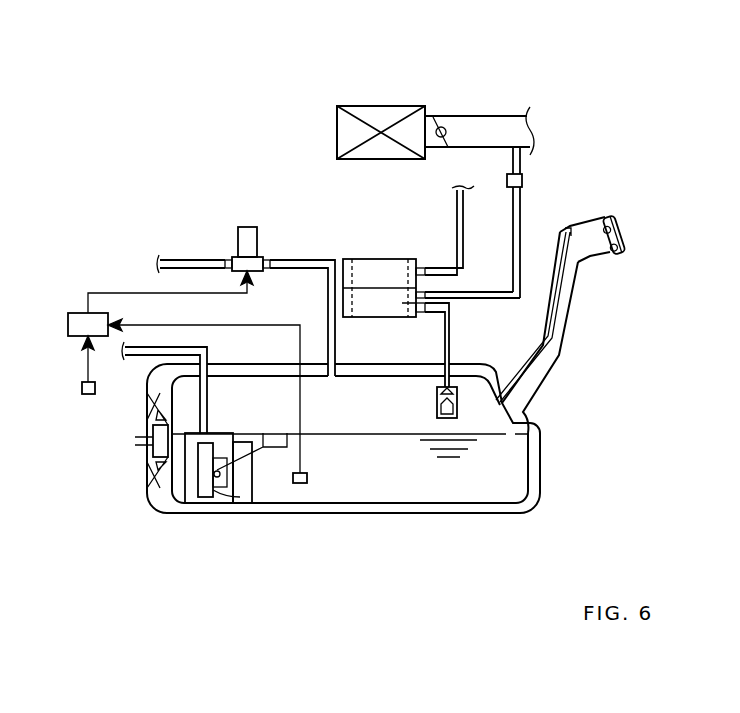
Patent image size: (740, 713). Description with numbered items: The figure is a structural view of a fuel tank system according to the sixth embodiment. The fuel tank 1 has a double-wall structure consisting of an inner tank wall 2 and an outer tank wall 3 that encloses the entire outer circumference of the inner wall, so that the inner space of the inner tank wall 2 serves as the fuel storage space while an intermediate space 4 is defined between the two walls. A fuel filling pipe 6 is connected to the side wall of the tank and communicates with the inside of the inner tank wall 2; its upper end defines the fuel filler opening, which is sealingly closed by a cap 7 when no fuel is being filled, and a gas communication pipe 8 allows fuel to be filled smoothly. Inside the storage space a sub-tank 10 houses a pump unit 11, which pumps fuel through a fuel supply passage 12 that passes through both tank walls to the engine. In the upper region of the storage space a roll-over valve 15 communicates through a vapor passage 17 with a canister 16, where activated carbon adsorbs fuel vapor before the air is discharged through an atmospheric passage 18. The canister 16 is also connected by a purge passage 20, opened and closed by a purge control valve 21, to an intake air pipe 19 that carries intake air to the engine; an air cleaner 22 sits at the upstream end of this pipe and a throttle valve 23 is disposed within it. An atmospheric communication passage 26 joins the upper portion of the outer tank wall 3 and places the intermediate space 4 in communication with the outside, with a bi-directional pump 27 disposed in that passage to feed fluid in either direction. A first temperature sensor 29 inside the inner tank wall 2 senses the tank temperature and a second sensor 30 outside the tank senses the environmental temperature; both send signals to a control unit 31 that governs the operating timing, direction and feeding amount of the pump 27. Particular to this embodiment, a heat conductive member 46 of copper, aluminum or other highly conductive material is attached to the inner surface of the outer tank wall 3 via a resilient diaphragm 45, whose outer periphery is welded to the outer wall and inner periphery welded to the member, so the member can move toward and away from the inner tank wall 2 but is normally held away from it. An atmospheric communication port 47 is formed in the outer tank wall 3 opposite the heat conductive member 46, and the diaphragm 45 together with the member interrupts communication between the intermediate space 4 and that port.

The fuel tank 1 is at (381, 476).
The inner tank wall 2 is at (498, 514).
The outer tank wall 3 is at (462, 508).
The intermediate space 4 is at (435, 503).
The fuel filling pipe 6 is at (565, 311).
The cap 7 is at (627, 235).
The gas communication pipe 8 is at (570, 227).
The sub-tank 10 is at (221, 499).
The pump unit 11 is at (207, 500).
The fuel supply passage 12 is at (210, 352).
The roll-over valve 15 is at (437, 398).
The canister 16 is at (367, 300).
The vapor passage 17 is at (451, 332).
The atmospheric passage 18 is at (457, 216).
The intake air pipe 19 is at (494, 110).
The purge passage 20 is at (513, 268).
The purge control valve 21 is at (523, 180).
The air cleaner 22 is at (386, 105).
The throttle valve 23 is at (443, 126).
The atmospheric communication passage 26 is at (295, 258).
The bi-directional pump 27 is at (247, 225).
The first temperature sensor 29 is at (299, 485).
The second sensor 30 is at (82, 387).
The control unit 31 is at (68, 323).
The diaphragm 45 is at (147, 412).
The heat conductive member 46 is at (150, 462).
The atmospheric communication port 47 is at (135, 440).